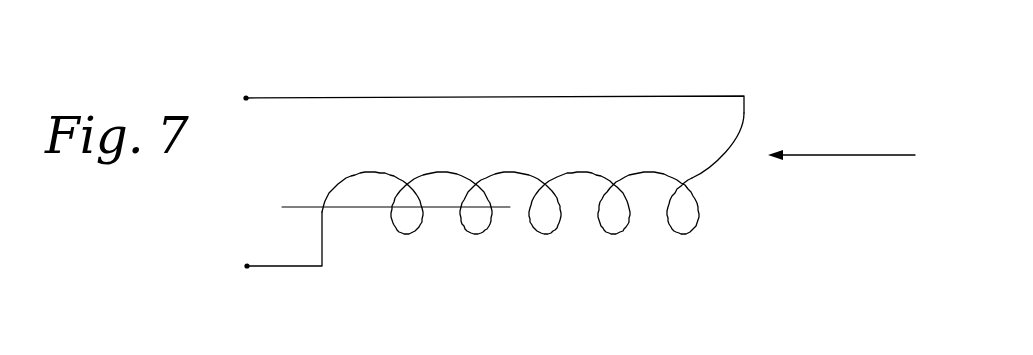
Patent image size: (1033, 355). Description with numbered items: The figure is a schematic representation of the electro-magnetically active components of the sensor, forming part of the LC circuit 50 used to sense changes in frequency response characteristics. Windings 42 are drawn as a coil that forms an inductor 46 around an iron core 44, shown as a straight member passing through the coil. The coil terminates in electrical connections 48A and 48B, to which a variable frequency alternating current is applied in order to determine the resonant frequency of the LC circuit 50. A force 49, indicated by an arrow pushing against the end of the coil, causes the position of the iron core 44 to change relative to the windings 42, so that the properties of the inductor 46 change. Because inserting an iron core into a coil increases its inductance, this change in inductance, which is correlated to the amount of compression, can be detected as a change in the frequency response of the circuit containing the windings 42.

The windings 42 is at (546, 235).
The iron core 44 is at (308, 207).
The inductor 46 is at (699, 218).
The electrical connection 48A is at (247, 96).
The electrical connection 48B is at (247, 268).
The force 49 is at (842, 157).
The LC circuit 50 is at (712, 52).